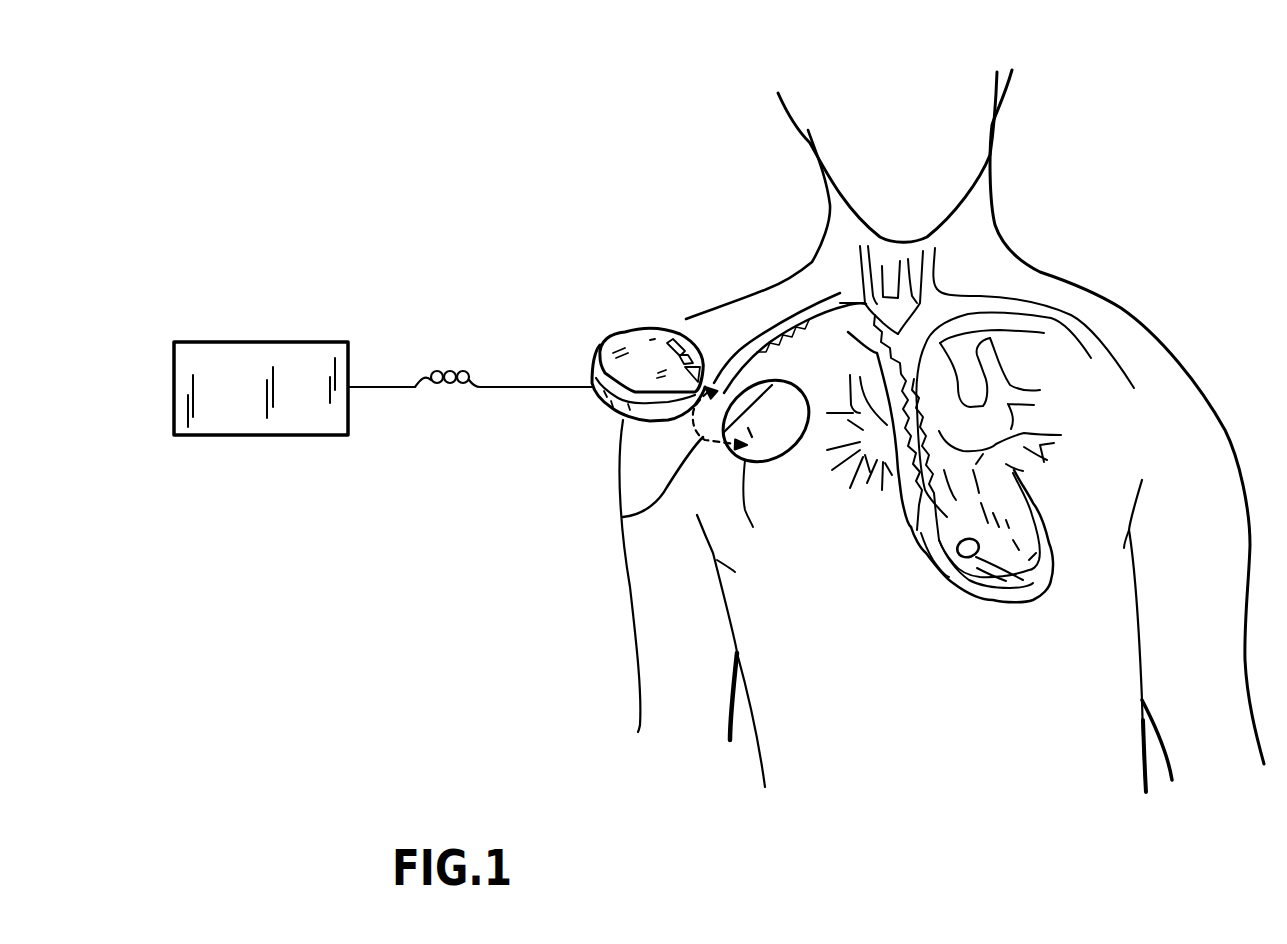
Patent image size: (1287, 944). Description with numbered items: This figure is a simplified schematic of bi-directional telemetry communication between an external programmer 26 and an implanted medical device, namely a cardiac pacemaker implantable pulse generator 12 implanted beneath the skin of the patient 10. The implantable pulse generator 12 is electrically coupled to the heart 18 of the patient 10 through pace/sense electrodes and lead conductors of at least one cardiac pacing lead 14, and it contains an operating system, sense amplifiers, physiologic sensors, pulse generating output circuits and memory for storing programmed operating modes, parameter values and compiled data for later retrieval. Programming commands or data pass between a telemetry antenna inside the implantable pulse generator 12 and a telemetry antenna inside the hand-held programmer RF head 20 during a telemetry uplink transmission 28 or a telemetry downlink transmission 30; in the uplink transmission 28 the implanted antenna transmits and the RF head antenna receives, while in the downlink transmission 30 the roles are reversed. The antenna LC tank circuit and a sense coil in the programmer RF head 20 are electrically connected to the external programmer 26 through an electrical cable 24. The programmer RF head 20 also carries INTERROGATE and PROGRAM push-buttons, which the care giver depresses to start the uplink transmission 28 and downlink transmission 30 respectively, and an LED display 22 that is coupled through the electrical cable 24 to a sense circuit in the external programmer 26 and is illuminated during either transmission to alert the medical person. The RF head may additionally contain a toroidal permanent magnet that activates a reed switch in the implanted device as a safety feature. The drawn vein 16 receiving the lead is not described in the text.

The patient 10 is at (1043, 94).
The cardiac pacemaker implantable pulse generator 12 is at (782, 450).
The cardiac pacing lead 14 is at (783, 326).
The vein 16 is at (847, 303).
The heart 18 is at (950, 585).
The programmer RF head 20 is at (633, 360).
The LED display 22 is at (707, 385).
The electrical cable 24 is at (446, 368).
The external programmer 26 is at (260, 342).
The telemetry uplink transmission 28 is at (735, 414).
The telemetry downlink transmission 30 is at (623, 518).